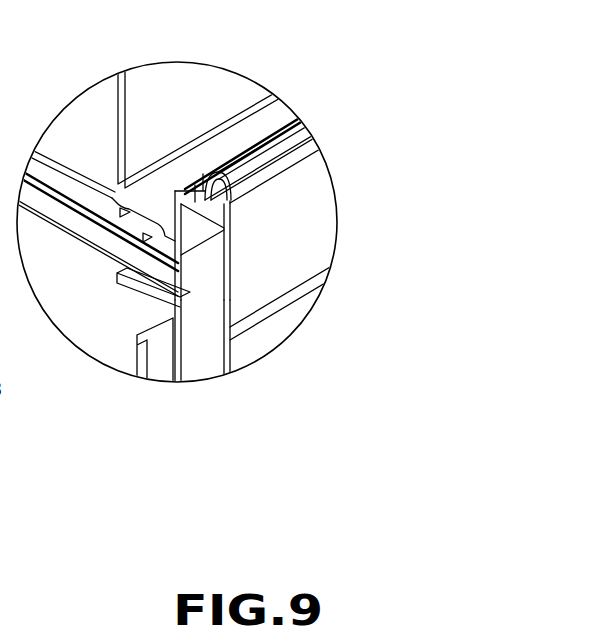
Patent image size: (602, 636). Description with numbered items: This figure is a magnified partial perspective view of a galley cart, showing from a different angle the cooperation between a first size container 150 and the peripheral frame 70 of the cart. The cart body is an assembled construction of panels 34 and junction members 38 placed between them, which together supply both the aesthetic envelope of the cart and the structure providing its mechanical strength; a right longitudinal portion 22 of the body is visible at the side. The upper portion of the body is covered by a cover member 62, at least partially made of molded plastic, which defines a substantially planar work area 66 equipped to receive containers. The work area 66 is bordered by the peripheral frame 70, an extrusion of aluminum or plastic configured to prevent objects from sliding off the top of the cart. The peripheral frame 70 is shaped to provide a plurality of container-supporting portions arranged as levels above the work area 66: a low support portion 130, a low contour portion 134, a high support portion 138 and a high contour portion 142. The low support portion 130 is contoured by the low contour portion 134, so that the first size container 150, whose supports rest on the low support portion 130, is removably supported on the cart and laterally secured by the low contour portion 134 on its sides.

The right longitudinal portion 22 is at (262, 330).
The panels 34 is at (30, 200).
The junction members 38 is at (310, 252).
The cover member 62 is at (63, 171).
The work area 66 is at (55, 172).
The peripheral frame 70 is at (313, 210).
The low support portion 130 is at (172, 226).
The low contour portion 134 is at (112, 232).
The high support portion 138 is at (250, 163).
The high contour portion 142 is at (262, 155).
The first size container 150 is at (183, 84).